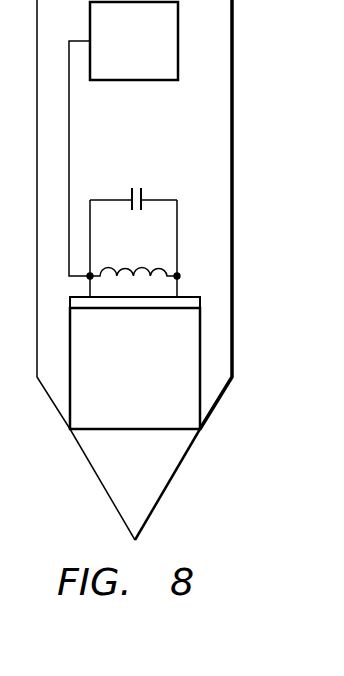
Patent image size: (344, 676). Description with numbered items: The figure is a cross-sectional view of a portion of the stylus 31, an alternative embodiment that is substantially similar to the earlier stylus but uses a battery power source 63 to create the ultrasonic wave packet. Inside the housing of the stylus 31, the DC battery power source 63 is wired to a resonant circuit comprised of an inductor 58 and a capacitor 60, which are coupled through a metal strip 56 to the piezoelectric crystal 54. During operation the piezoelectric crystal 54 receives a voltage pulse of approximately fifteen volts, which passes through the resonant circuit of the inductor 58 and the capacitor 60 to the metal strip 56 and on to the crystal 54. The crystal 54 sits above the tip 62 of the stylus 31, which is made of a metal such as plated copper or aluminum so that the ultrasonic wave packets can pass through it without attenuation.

The stylus 31 is at (232, 170).
The piezoelectric crystal 54 is at (147, 388).
The metal strip 56 is at (195, 304).
The inductor 58 is at (124, 258).
The capacitor 60 is at (142, 196).
The tip 62 is at (147, 487).
The battery power source 63 is at (147, 80).